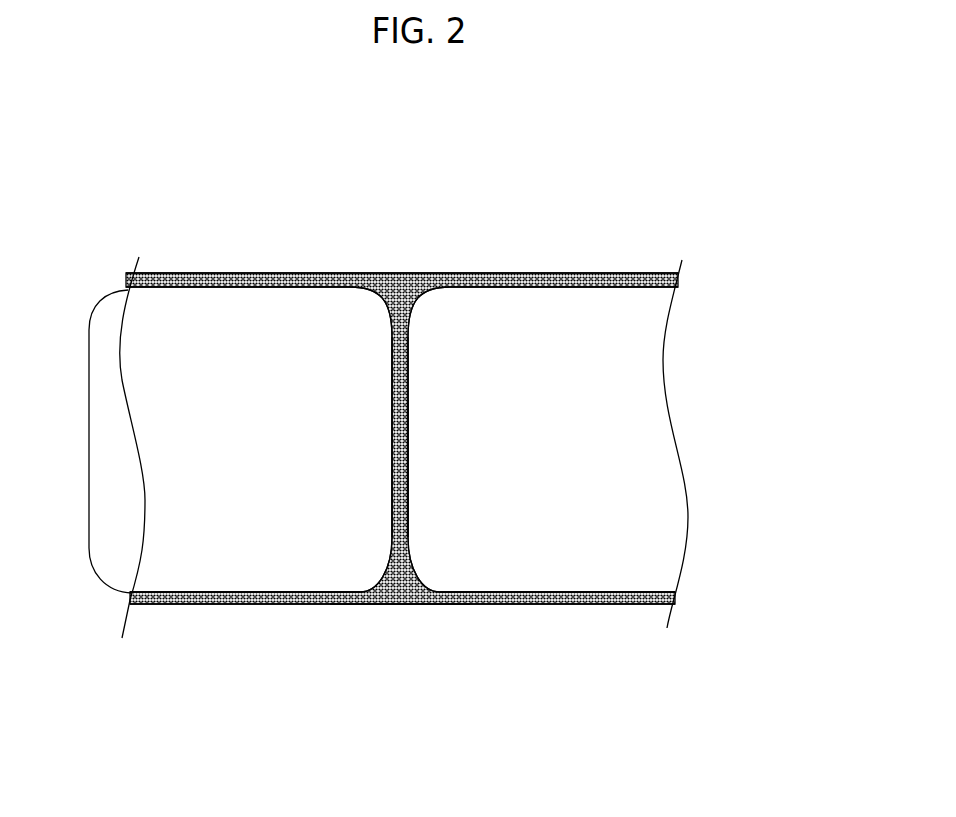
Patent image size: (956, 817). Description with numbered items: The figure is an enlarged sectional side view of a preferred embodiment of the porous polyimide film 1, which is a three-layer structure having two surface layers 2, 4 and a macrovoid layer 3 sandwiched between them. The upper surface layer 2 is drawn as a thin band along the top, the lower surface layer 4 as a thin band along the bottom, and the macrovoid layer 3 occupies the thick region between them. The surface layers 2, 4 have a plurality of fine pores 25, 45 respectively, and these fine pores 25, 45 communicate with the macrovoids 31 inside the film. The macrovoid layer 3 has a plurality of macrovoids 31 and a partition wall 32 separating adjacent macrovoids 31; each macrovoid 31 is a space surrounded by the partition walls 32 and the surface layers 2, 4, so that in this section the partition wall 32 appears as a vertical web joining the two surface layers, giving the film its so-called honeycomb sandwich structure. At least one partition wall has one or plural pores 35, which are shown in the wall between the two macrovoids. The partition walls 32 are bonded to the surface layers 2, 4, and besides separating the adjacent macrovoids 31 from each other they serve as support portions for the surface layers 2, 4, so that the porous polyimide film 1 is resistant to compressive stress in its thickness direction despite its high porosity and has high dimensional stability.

The porous polyimide film 1 is at (308, 275).
The surface layer 2 is at (741, 265).
The macrovoid layer 3 is at (741, 288).
The surface layer 4 is at (741, 587).
The fine pores 25 is at (383, 273).
The macrovoids 31 is at (257, 558).
The partition wall 32 is at (408, 490).
The pores 35 is at (408, 428).
The fine pores 45 is at (363, 604).